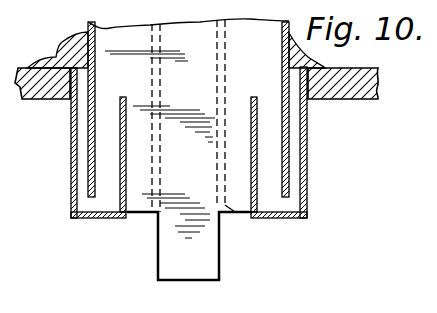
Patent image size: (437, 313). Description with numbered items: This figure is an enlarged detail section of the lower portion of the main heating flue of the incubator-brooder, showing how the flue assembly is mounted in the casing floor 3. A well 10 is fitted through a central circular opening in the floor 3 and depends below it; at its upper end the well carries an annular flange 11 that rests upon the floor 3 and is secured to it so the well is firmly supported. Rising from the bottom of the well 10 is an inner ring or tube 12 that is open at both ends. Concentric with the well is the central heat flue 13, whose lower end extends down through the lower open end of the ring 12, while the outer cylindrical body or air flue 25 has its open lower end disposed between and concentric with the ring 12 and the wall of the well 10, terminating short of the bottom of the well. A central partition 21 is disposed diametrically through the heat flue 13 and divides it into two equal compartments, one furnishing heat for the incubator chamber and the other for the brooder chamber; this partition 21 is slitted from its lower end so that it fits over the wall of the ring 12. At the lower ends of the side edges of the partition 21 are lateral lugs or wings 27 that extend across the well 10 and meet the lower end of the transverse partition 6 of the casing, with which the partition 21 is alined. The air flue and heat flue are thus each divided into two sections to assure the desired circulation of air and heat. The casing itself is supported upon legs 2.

The legs 2 is at (297, 68).
The floor 3 is at (372, 100).
The transverse partition 6 is at (80, 50).
The well 10 is at (308, 143).
The annular flange 11 is at (42, 65).
The inner ring or tube 12 is at (127, 148).
The central heat flue 13 is at (237, 220).
The central partition 21 is at (160, 144).
The outer cylindrical body or air flue 25 is at (283, 48).
The lateral lugs or wings 27 is at (72, 153).